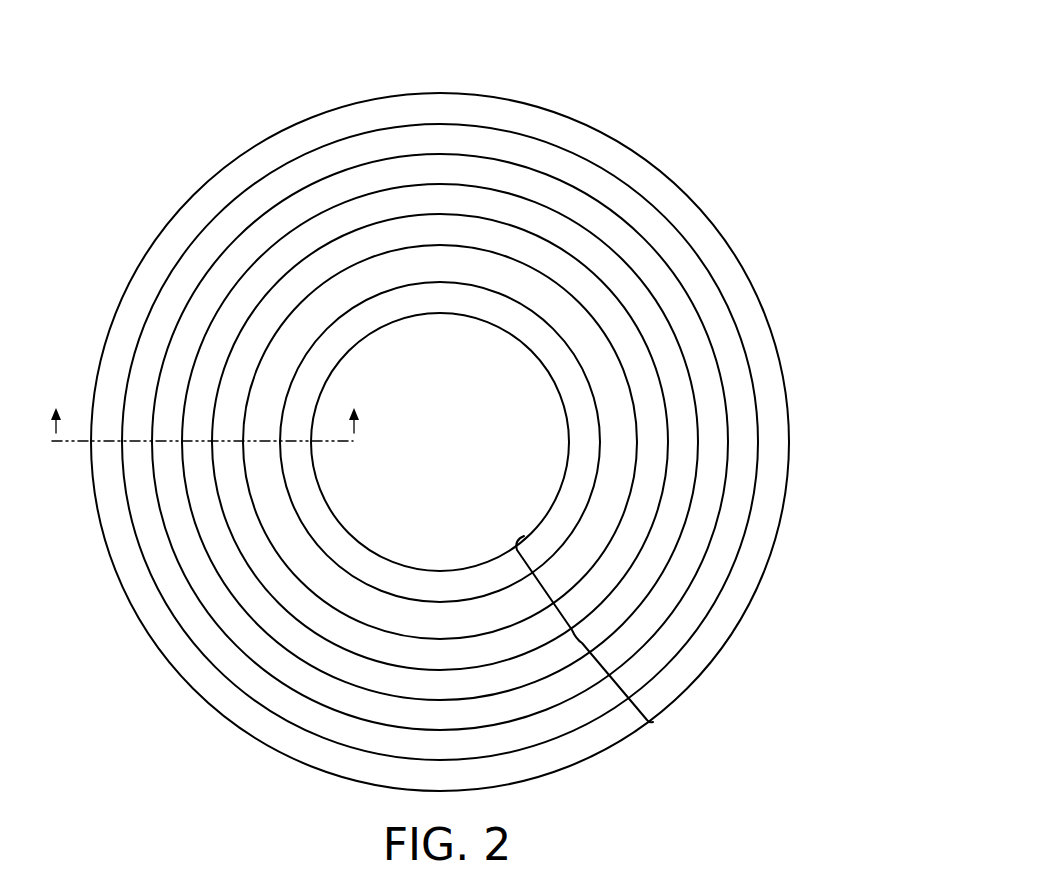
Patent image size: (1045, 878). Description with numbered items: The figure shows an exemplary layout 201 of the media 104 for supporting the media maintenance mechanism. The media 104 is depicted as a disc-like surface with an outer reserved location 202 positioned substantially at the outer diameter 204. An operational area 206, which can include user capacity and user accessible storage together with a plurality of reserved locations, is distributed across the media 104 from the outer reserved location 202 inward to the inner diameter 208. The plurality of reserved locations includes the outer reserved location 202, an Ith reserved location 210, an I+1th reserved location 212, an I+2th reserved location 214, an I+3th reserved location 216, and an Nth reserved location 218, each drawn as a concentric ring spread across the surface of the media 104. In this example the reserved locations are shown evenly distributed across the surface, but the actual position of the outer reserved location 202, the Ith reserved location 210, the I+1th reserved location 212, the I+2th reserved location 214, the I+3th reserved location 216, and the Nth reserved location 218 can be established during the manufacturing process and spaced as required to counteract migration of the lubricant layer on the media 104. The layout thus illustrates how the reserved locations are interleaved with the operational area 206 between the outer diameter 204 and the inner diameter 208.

The exemplary layout 201 is at (435, 432).
The media 104 is at (440, 448).
The outer reserved location 202 is at (613, 745).
The outer diameter 204 is at (440, 462).
The operational area 206 is at (575, 632).
The inner diameter 208 is at (562, 473).
The Ith reserved location 210 is at (247, 658).
The I+1th reserved location 212 is at (233, 595).
The I+2th reserved location 214 is at (233, 535).
The I+3th reserved location 216 is at (637, 417).
The Nth reserved location 218 is at (568, 342).